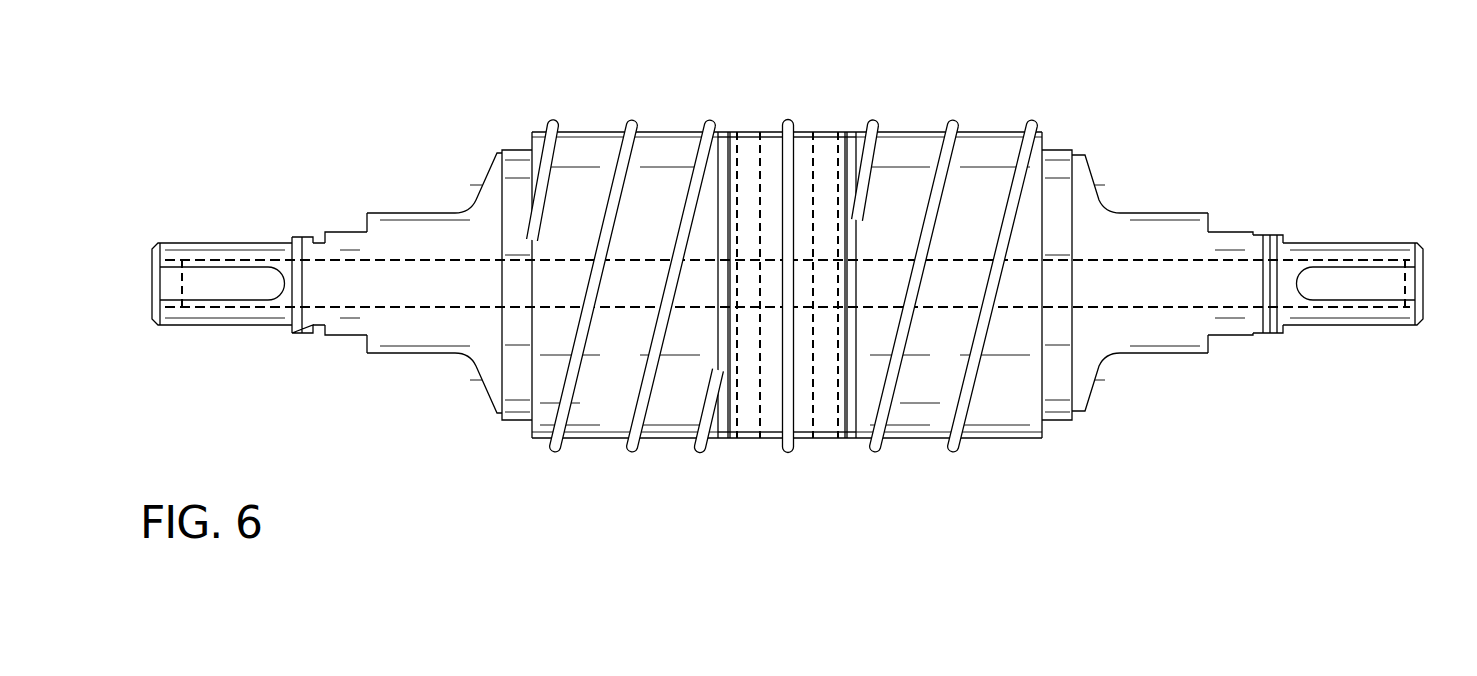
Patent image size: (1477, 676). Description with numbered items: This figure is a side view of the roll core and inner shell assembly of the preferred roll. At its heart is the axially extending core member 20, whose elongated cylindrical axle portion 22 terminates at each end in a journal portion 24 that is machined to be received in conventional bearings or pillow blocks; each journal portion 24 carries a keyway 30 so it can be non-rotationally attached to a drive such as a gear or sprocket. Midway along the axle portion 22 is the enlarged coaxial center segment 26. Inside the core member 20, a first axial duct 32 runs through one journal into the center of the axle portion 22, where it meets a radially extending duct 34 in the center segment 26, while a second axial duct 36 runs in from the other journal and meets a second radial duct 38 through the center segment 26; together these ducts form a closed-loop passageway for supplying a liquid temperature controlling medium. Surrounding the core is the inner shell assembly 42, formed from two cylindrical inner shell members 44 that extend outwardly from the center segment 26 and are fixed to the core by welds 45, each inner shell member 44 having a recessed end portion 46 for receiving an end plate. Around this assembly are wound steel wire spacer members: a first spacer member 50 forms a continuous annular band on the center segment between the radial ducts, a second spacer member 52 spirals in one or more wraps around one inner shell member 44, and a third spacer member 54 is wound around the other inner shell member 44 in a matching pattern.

The core member 20 is at (1113, 378).
The axle portion 22 is at (440, 210).
The journal portion 24 is at (247, 242).
The center segment 26 is at (808, 445).
The keyway 30 is at (175, 268).
The first axial passageway or duct 32 is at (412, 262).
The radially extending duct 34 is at (735, 422).
The second axial passageway or duct 36 is at (1117, 262).
The radially extending duct 38 is at (837, 148).
The inner shell assembly 42 is at (623, 455).
The inner shell member 44 is at (600, 379).
The weld 45 is at (727, 132).
The recessed end portion 46 is at (515, 148).
The first spacer member 50 is at (787, 452).
The second spacer member 52 is at (712, 120).
The third spacer member 54 is at (877, 120).